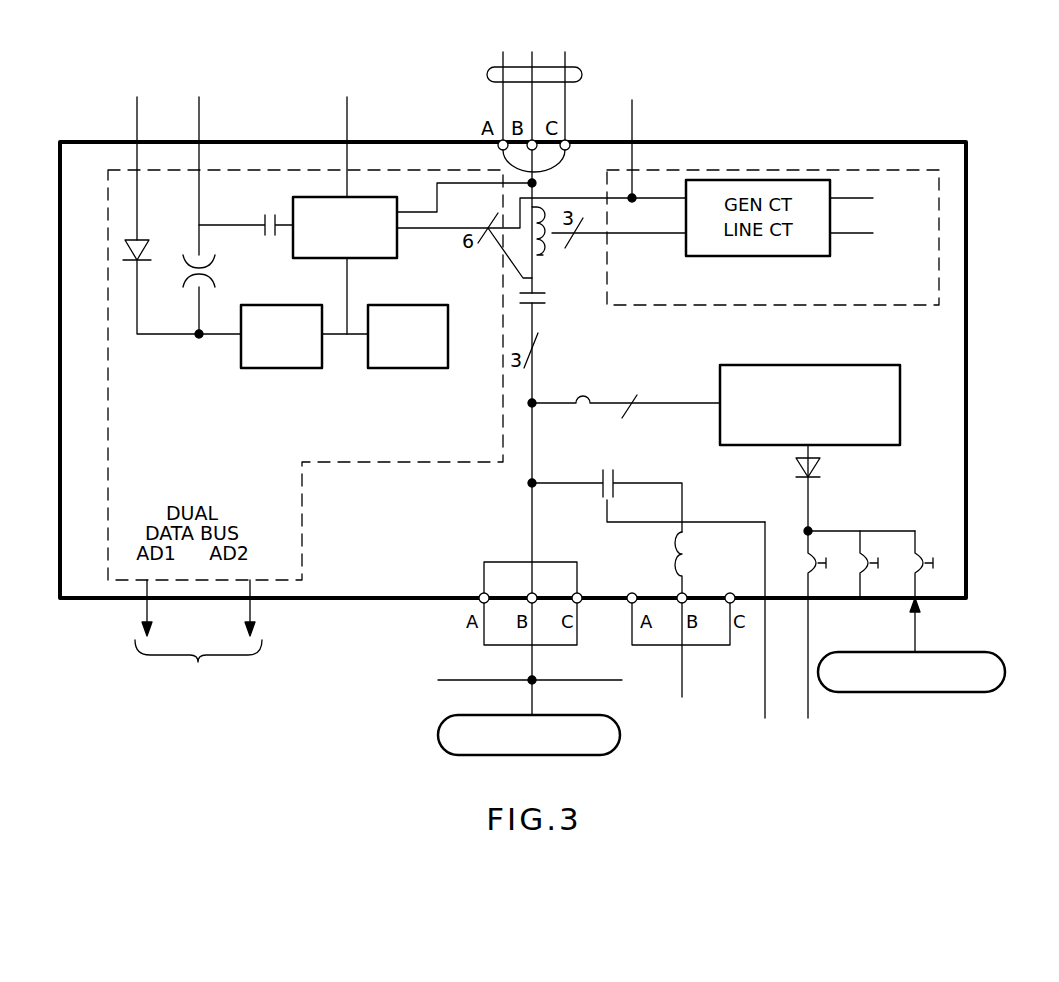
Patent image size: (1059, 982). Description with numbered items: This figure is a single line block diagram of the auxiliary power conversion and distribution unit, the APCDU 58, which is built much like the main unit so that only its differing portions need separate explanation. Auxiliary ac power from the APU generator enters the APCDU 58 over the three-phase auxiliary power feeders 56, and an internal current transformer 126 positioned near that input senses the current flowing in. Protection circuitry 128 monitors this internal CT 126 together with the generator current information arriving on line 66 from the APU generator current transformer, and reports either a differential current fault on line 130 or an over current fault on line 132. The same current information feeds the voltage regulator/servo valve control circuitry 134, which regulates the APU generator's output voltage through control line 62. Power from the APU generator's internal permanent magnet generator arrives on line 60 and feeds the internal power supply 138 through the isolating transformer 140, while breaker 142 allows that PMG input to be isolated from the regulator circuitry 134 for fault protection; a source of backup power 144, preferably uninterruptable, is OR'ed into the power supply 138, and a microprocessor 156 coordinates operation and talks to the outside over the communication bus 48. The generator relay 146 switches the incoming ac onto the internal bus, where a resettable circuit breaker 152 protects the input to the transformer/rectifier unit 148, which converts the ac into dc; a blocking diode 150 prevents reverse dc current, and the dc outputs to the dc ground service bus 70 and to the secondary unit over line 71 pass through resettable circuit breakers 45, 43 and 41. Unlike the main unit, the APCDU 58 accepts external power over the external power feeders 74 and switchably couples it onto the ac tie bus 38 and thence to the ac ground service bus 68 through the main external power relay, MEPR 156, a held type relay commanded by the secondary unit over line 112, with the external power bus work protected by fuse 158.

The ac tie bus 38 is at (450, 678).
The resettable circuit breaker 41 is at (920, 550).
The resettable circuit breaker 43 is at (867, 548).
The resettable circuit breaker 45 is at (818, 548).
The communication bus 48 is at (198, 637).
The auxiliary power feeders 56 is at (582, 80).
The auxiliary power conversion and distribution unit 58 is at (967, 312).
The PMG line 60 is at (199, 112).
The control line 62 is at (348, 103).
The current transformer line 66 is at (632, 103).
The ac ground service bus 68 is at (437, 745).
The dc ground service bus 70 is at (978, 652).
The dc supply line to SPCDU 71 is at (808, 705).
The external power feeders 74 is at (682, 682).
The MEPR control line 112 is at (762, 705).
The internal current transformer 126 is at (543, 255).
The protection circuitry 128 is at (763, 180).
The differential current fault line 130 is at (870, 203).
The over current fault line 132 is at (867, 237).
The voltage regulator/servo valve control circuitry 134 is at (372, 258).
The internal power supply 138 is at (263, 368).
The transformer 140 is at (217, 268).
The breaker 142 is at (267, 220).
The source of backup power 144 is at (137, 117).
The generator relay 146 is at (538, 307).
The transformer/rectifier unit 148 is at (900, 395).
The blocking diode 150 is at (803, 475).
The resettable circuit breaker 152 is at (583, 396).
The main external power relay / microprocessor 156 is at (385, 368).
The fuse 158 is at (677, 553).